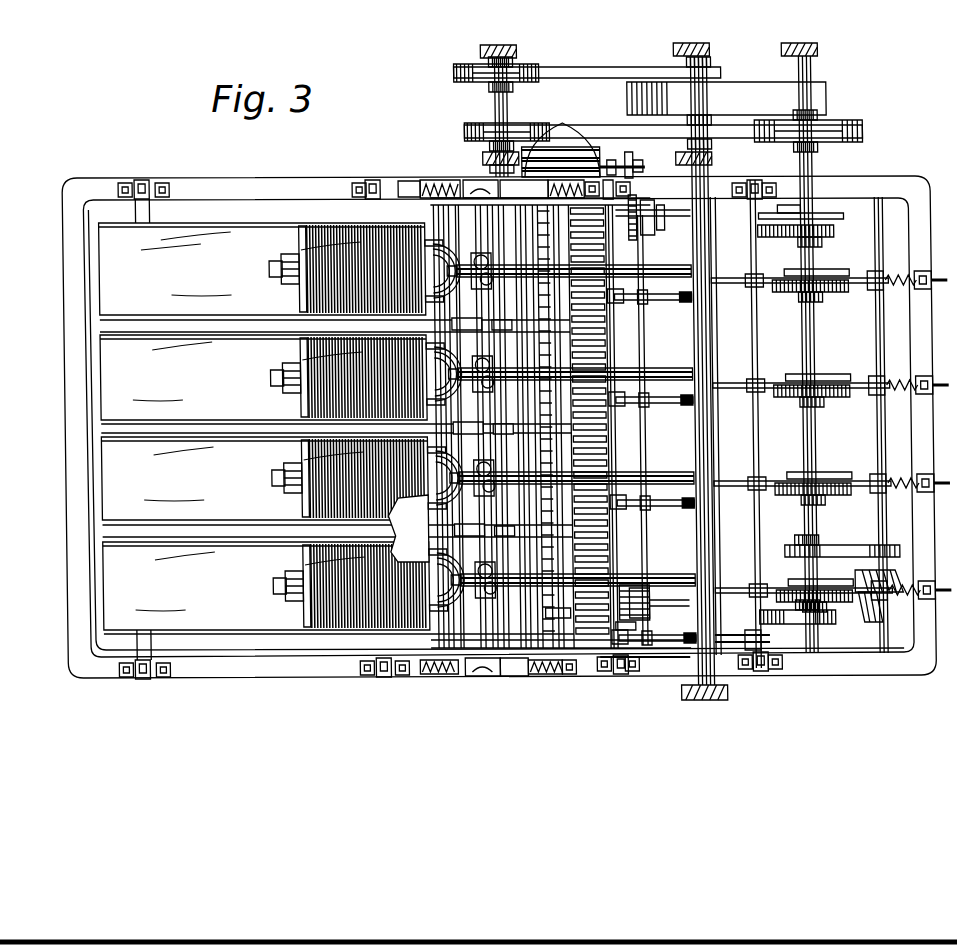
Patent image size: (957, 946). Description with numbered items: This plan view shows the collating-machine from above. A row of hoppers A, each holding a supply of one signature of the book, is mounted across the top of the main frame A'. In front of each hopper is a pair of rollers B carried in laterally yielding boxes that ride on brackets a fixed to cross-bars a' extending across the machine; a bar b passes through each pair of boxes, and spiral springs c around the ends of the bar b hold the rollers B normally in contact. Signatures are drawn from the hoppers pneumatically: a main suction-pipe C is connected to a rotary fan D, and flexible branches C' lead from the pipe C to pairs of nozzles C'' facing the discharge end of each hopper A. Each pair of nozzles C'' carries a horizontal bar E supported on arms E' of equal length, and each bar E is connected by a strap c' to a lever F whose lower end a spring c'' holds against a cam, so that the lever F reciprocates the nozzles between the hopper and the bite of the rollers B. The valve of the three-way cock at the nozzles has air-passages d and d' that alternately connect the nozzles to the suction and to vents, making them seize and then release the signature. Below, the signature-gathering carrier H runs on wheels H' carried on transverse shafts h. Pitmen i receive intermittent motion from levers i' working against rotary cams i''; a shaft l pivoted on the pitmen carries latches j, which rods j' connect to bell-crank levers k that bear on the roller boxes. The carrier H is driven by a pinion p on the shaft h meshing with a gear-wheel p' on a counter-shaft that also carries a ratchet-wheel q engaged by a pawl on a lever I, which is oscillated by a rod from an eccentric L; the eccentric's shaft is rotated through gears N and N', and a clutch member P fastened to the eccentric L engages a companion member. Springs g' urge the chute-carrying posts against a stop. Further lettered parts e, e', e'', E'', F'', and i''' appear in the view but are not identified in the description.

The hopper A is at (336, 428).
The main frame A' is at (499, 428).
The bar b is at (414, 180).
The spiral spring c is at (538, 427).
The air-passage d is at (550, 421).
The air-passage d' is at (408, 528).
The comb bar e is at (561, 426).
The comb bracket e' is at (558, 605).
The comb guide e'' is at (516, 562).
The flexible branch C' is at (560, 425).
The nozzle C'' is at (466, 395).
The roller B is at (493, 347).
The bracket a is at (519, 403).
The cross-bar a' is at (460, 351).
The rotary fan D is at (730, 371).
The carrier wheel H' is at (658, 111).
The pinion p is at (621, 157).
The gear-wheel p' is at (633, 224).
The ratchet-wheel q is at (647, 237).
The carrier-shaft h is at (642, 169).
The spring g' is at (653, 208).
The lever F is at (811, 348).
The gear hub F'' is at (846, 460).
The horizontal bar E is at (831, 424).
The arm E' is at (700, 434).
The lever pivot E'' is at (738, 403).
The strap c' is at (791, 412).
The spring c'' is at (903, 416).
The pitman i is at (750, 424).
The lever i' is at (779, 422).
The rotary cam i'' is at (797, 624).
The gear i''' is at (806, 234).
The shaft l is at (748, 572).
The gear N is at (870, 620).
The gear N' is at (870, 575).
The latch j is at (651, 430).
The rod j' is at (682, 468).
The bell-crank lever k is at (653, 672).
The rotary eccentric L is at (654, 602).
The clutch member P is at (627, 633).
The main pneumatic suction-pipe C is at (684, 325).
The signature-gathering carrier H is at (629, 451).
The lever I is at (657, 448).